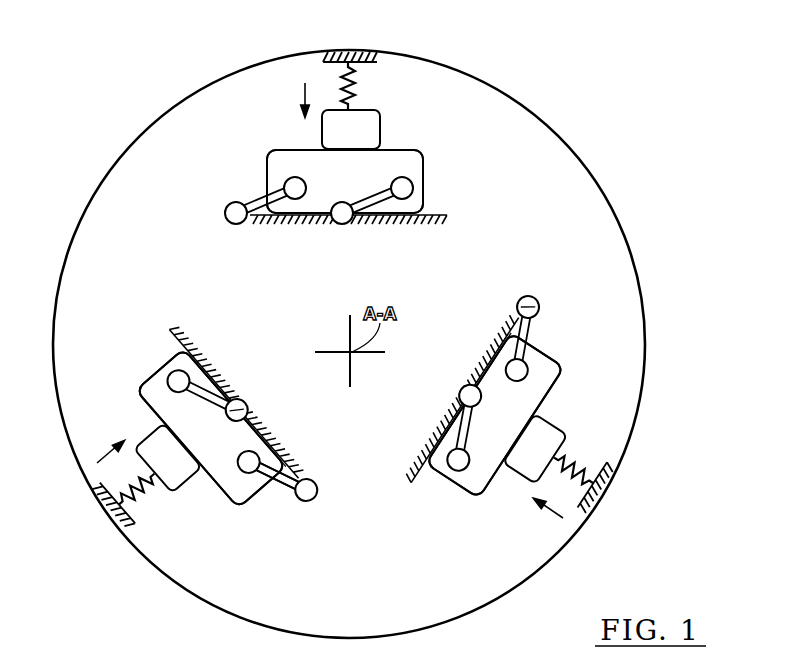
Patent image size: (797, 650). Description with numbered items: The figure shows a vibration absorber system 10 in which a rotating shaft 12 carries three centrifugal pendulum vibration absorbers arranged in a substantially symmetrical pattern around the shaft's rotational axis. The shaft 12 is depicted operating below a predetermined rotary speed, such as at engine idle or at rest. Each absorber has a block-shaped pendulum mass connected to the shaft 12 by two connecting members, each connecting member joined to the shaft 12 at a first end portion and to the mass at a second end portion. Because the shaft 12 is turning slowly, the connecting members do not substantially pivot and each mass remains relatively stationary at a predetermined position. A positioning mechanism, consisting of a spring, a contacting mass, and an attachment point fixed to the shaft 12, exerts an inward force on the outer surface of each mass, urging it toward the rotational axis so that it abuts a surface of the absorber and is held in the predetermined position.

The vibration absorber system 10 is at (628, 88).
The shaft 12 is at (605, 188).